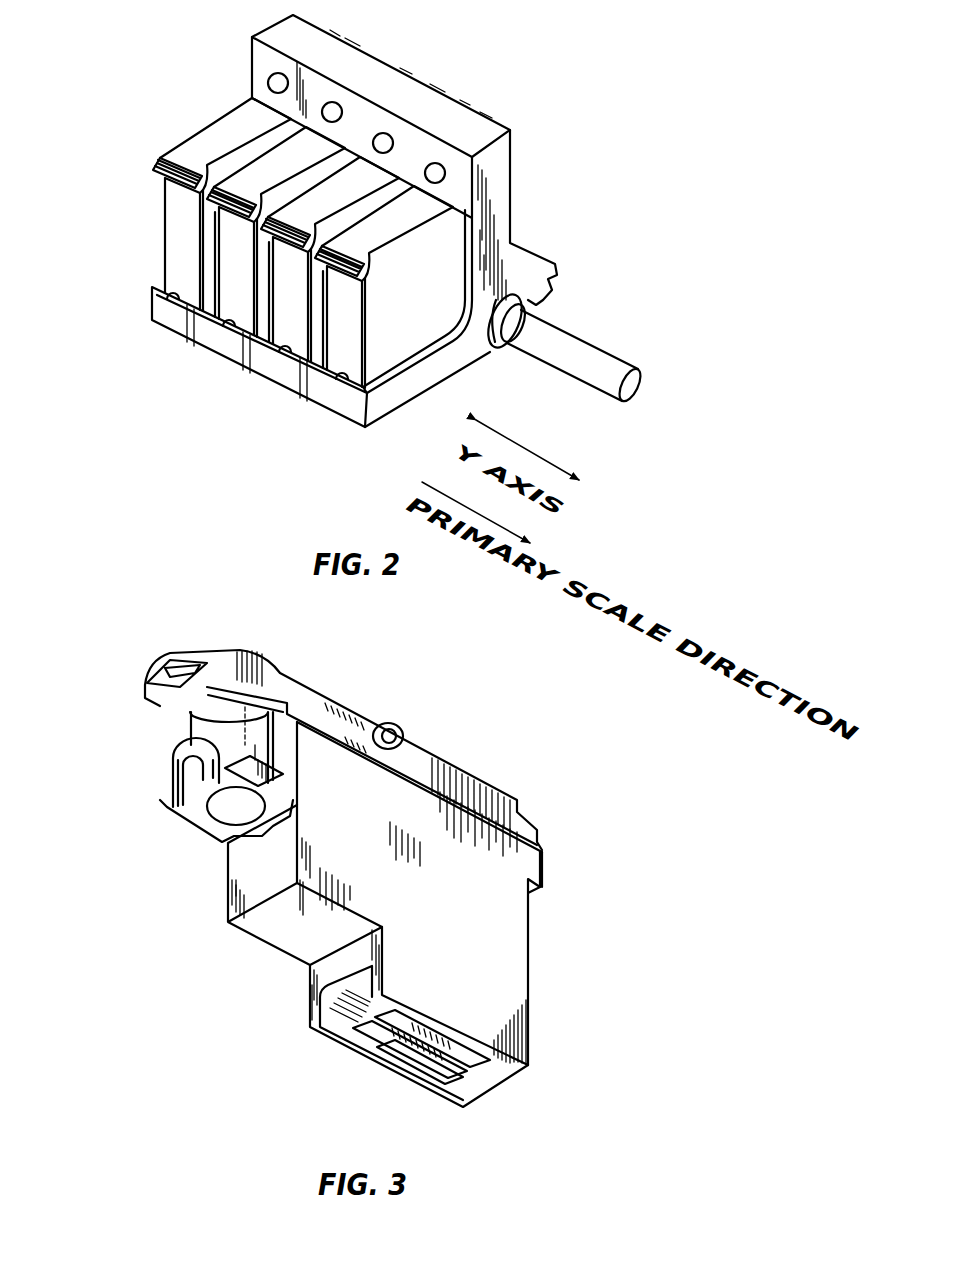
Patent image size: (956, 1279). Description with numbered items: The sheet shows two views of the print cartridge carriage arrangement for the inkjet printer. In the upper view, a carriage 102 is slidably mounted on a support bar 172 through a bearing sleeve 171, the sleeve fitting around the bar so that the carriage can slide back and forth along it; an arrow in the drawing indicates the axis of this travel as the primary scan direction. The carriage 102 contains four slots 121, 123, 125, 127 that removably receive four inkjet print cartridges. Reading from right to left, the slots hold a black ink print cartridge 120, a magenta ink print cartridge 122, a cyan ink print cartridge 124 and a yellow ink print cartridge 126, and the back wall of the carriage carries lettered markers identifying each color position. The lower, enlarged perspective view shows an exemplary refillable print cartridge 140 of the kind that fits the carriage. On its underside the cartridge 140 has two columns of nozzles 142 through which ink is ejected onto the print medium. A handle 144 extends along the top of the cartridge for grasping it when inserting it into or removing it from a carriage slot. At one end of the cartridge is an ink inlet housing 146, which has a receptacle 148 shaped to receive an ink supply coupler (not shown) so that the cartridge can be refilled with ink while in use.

In FIG. 2, the carriage 102 is at (450, 368).
In FIG. 2, the black ink print cartridge 120 is at (410, 212).
In FIG. 2, the slot 121 is at (342, 374).
In FIG. 2, the magenta ink print cartridge 122 is at (360, 182).
In FIG. 2, the slot 123 is at (284, 347).
In FIG. 2, the cyan ink print cartridge 124 is at (282, 160).
In FIG. 2, the slot 125 is at (230, 321).
In FIG. 2, the yellow ink print cartridge 126 is at (202, 140).
In FIG. 2, the slot 127 is at (173, 294).
In FIG. 2, the bearing sleeve 171 is at (504, 350).
In FIG. 2, the support bar 172 is at (580, 347).
In FIG. 3, the refillable print cartridge 140 is at (490, 942).
In FIG. 3, the nozzles 142 is at (455, 1050).
In FIG. 3, the handle 144 is at (275, 676).
In FIG. 3, the ink inlet housing 146 is at (205, 718).
In FIG. 3, the receptacle 148 is at (237, 812).